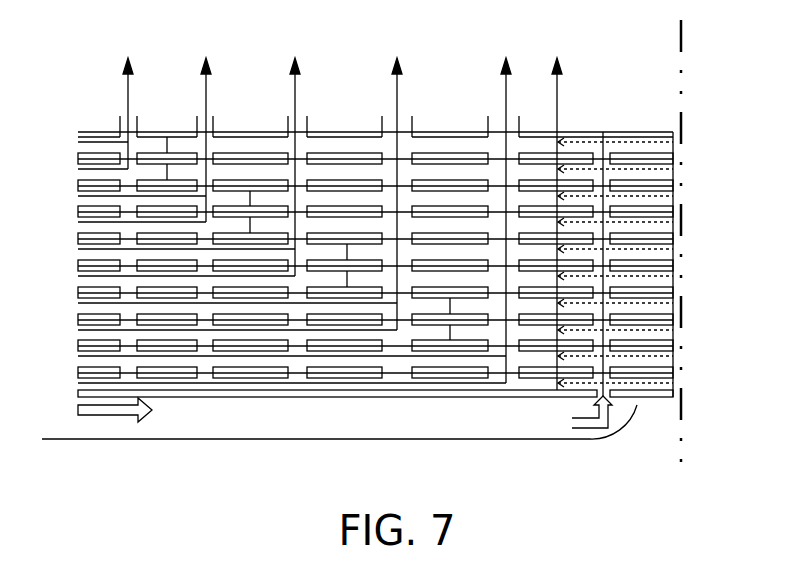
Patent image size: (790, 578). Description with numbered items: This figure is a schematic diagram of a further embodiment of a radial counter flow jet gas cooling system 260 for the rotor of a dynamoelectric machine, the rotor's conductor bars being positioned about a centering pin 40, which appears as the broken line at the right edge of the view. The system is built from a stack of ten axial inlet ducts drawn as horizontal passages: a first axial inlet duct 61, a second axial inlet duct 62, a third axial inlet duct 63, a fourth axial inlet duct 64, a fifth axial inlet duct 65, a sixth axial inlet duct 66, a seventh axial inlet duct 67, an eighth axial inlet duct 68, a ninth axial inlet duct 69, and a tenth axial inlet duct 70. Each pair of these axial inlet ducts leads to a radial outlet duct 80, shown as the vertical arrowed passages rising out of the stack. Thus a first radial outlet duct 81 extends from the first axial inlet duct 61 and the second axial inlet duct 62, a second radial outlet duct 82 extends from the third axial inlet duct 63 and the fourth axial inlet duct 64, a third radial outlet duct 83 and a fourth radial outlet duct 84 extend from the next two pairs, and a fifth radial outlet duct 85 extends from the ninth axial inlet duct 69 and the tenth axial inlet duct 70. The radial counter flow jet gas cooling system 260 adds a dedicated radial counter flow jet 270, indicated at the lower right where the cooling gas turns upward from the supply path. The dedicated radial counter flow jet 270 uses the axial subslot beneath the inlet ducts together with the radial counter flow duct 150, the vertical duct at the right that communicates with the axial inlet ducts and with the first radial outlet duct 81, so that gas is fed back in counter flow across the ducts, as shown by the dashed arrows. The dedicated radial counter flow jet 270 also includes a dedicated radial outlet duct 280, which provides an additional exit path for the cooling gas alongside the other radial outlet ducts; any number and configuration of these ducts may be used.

The centering pin 40 is at (682, 25).
The first axial inlet duct 61 is at (78, 383).
The second axial inlet duct 62 is at (78, 356).
The third axial inlet duct 63 is at (78, 330).
The fourth axial inlet duct 64 is at (78, 303).
The fifth axial inlet duct 65 is at (78, 276).
The sixth axial inlet duct 66 is at (78, 249).
The seventh axial inlet duct 67 is at (78, 222).
The eighth axial inlet duct 68 is at (78, 196).
The ninth axial inlet duct 69 is at (78, 169).
The tenth axial inlet duct 70 is at (78, 142).
The radial outlet duct 80 is at (503, 392).
The first radial outlet duct 81 is at (506, 112).
The second radial outlet duct 82 is at (397, 97).
The third radial outlet duct 83 is at (295, 88).
The fourth radial outlet duct 84 is at (206, 88).
The fifth radial outlet duct 85 is at (128, 88).
The radial counter flow duct 150 is at (602, 152).
The radial counter flow jet gas cooling system 260 is at (259, 428).
The dedicated radial counter flow jet 270 is at (602, 441).
The dedicated radial outlet duct 280 is at (560, 90).